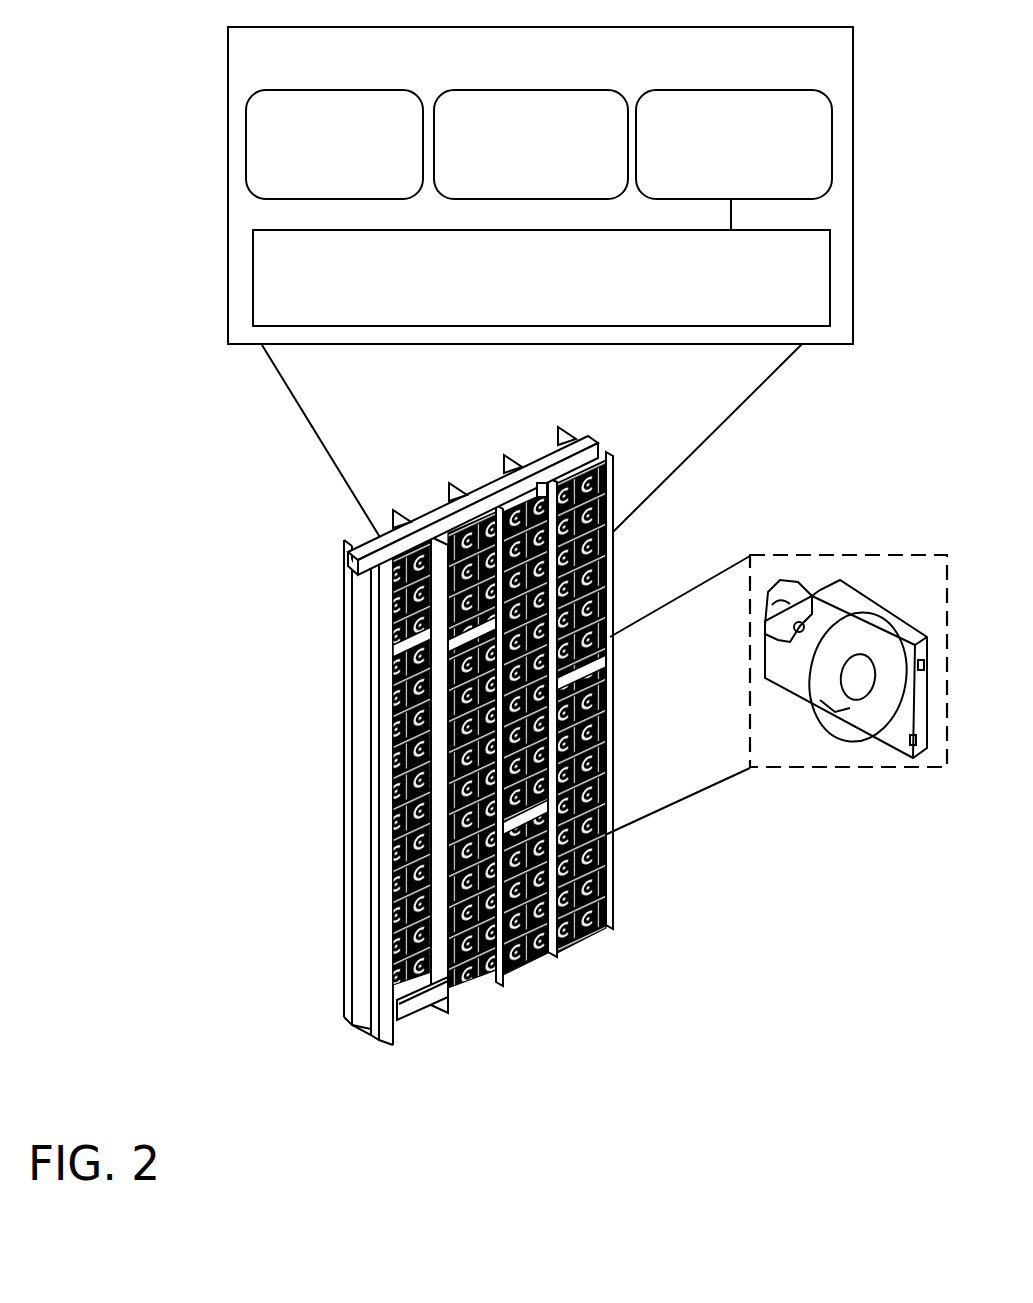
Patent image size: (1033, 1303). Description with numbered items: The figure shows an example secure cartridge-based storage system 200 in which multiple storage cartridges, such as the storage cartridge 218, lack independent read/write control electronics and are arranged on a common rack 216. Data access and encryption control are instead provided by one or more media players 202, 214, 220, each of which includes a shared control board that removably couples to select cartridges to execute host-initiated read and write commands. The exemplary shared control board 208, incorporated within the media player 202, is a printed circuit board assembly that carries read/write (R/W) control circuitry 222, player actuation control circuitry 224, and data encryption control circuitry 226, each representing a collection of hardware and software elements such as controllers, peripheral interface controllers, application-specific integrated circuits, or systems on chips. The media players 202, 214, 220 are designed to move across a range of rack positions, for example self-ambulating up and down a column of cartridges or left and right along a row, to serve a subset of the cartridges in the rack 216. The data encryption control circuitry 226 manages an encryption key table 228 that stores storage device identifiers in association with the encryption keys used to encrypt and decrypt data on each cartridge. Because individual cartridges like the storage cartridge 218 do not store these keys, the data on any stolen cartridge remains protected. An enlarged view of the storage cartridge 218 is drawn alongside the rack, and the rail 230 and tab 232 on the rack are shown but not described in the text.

The secure cartridge-based storage system 200 is at (183, 356).
The shared control board 208 is at (516, 60).
The read/write (R/W) control circuitry 222 is at (354, 182).
The player actuation control circuitry 224 is at (551, 182).
The data encryption control circuitry 226 is at (751, 182).
The encryption key table 228 is at (562, 306).
The media player 202 is at (497, 640).
The media player 214 is at (606, 655).
The rack 216 is at (357, 730).
The storage cartridge 218 is at (818, 768).
The media player 220 is at (543, 812).
The top rail 230 is at (598, 457).
The rail tab 232 is at (538, 495).